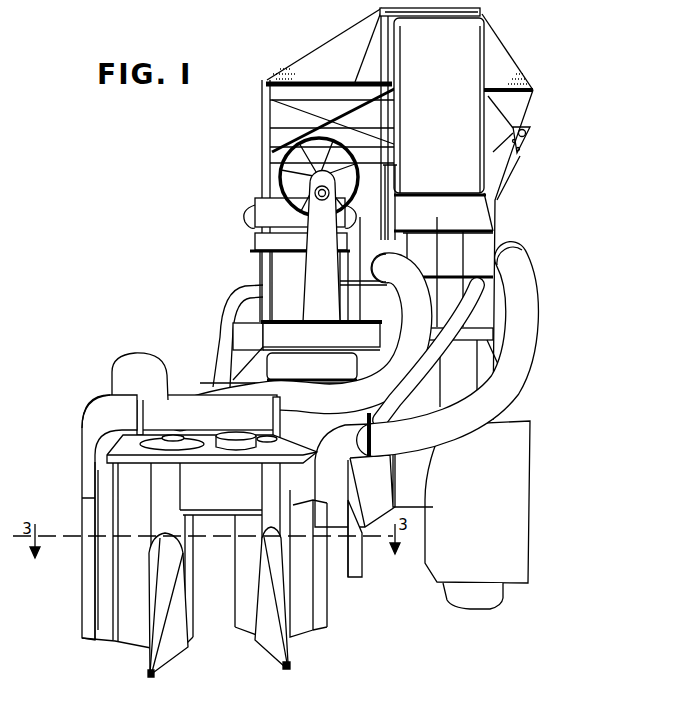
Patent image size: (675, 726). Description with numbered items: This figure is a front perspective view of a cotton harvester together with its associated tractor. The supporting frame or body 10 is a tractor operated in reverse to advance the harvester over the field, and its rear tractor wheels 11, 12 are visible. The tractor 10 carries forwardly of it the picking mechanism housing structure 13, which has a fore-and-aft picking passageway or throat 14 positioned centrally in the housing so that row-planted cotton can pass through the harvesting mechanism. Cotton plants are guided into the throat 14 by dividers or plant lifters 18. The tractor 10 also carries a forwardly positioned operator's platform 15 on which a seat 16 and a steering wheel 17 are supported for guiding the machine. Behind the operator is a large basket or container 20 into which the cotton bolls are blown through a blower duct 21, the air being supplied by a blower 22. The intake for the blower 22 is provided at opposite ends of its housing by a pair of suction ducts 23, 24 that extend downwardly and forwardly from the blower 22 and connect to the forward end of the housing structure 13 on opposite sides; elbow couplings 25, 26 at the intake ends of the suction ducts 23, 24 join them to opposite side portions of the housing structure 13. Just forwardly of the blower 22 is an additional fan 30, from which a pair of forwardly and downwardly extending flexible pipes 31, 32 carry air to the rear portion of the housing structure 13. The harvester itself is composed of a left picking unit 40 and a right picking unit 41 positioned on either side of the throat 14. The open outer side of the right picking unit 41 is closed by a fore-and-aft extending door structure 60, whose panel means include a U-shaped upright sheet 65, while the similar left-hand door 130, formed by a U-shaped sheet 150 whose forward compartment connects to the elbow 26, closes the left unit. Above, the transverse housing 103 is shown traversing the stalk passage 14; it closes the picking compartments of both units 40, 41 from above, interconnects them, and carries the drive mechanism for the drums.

The supporting frame or body 10 is at (514, 408).
The rear tractor wheel 11 is at (497, 598).
The rear tractor wheel 12 is at (130, 360).
The picking mechanism housing structure 13 is at (98, 413).
The picking passageway or throat 14 is at (217, 617).
The operator's platform 15 is at (287, 327).
The seat 16 is at (265, 243).
The steering wheel 17 is at (270, 183).
The dividers or plant lifters 18 is at (174, 650).
The basket or container 20 is at (309, 50).
The blower duct 21 is at (470, 55).
The blower 22 is at (484, 248).
The suction duct 23 is at (177, 399).
The suction duct 24 is at (532, 345).
The elbow coupling 25 is at (93, 428).
The elbow coupling 26 is at (350, 458).
The fan 30 is at (510, 250).
The flexible pipe 31 is at (426, 300).
The flexible pipe 32 is at (473, 309).
The left picking unit 40 is at (321, 632).
The right picking unit 41 is at (124, 643).
The door structure 60 is at (84, 589).
The upright sheet 65 is at (87, 570).
The transverse housing 103 is at (209, 477).
The left-hand door 130 is at (339, 596).
The U-shaped sheet 150 is at (342, 553).